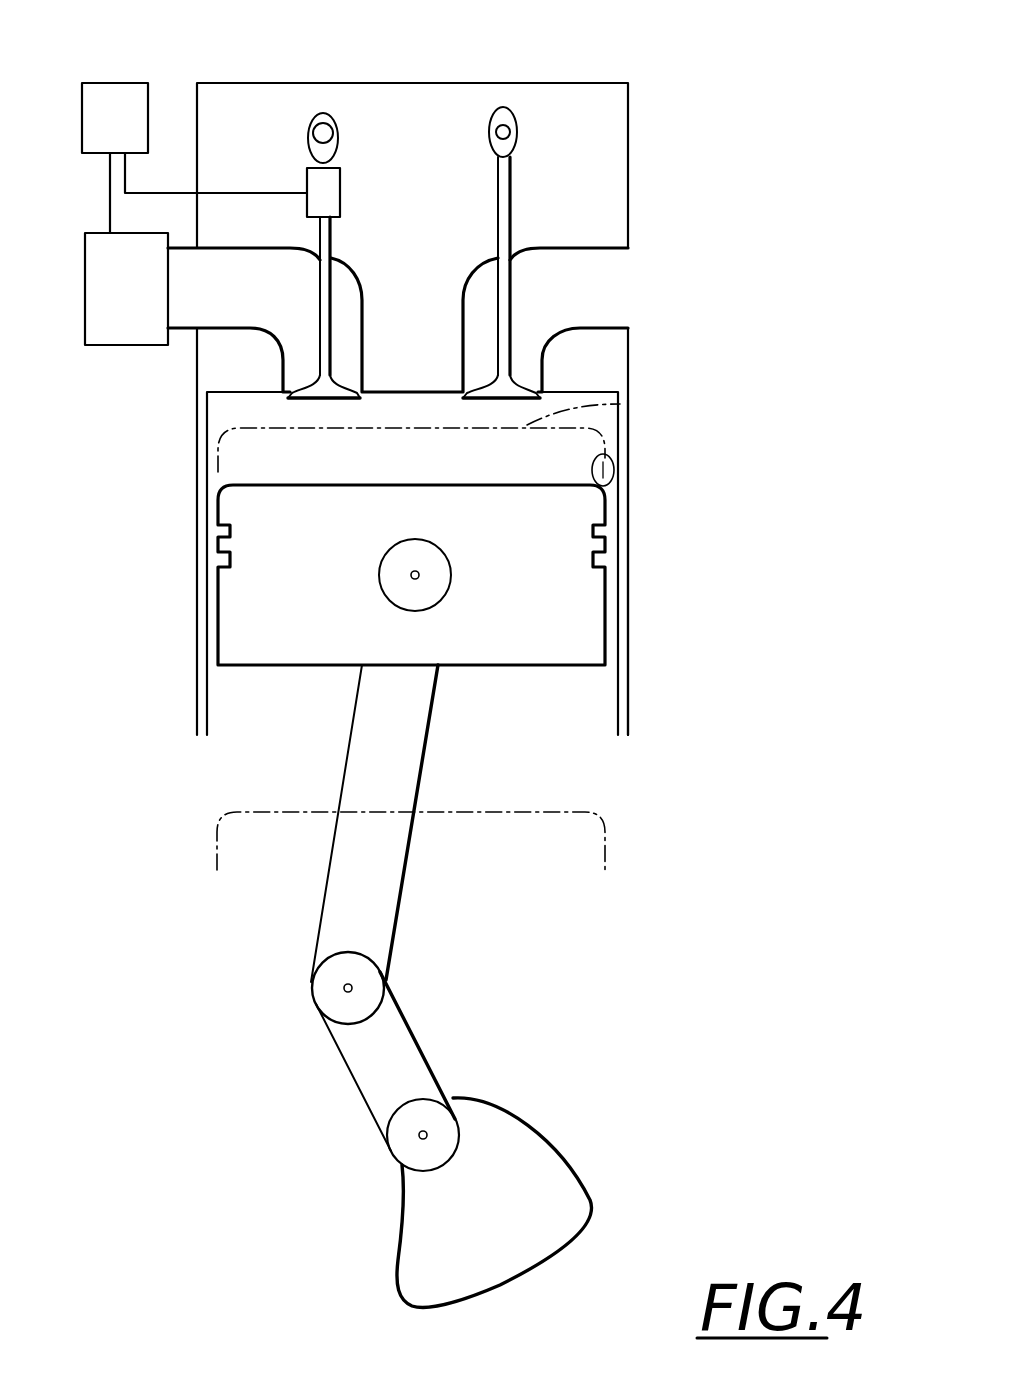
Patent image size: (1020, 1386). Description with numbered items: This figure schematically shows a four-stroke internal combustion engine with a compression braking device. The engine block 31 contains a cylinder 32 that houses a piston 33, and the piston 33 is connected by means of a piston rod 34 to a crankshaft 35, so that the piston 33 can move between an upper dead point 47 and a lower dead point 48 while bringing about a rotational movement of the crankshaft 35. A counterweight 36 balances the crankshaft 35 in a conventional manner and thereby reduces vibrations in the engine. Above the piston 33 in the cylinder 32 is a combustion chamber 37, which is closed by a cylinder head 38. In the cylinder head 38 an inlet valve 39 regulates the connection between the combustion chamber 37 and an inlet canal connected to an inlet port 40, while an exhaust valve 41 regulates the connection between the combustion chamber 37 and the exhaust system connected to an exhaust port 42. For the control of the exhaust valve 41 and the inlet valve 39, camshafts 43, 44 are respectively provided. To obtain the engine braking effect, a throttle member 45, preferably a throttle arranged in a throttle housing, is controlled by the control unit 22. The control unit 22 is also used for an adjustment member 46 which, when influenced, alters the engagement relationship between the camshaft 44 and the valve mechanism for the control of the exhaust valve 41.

The control unit 22 is at (100, 130).
The engine block 31 is at (622, 578).
The cylinder 32 is at (608, 455).
The piston 33 is at (489, 605).
The piston rod 34 is at (385, 887).
The crankshaft 35 is at (426, 1133).
The counterweight 36 is at (467, 1220).
The combustion chamber 37 is at (392, 467).
The cylinder head 38 is at (397, 227).
The inlet valve 39 is at (507, 205).
The inlet port 40 is at (550, 300).
The exhaust valve 41 is at (327, 340).
The exhaust port 42 is at (232, 300).
The camshaft 43 is at (518, 130).
The camshaft 44 is at (312, 137).
The throttle member 45 is at (104, 300).
The adjustment member 46 is at (342, 190).
The upper dead point 47 is at (620, 404).
The lower dead point 48 is at (565, 810).